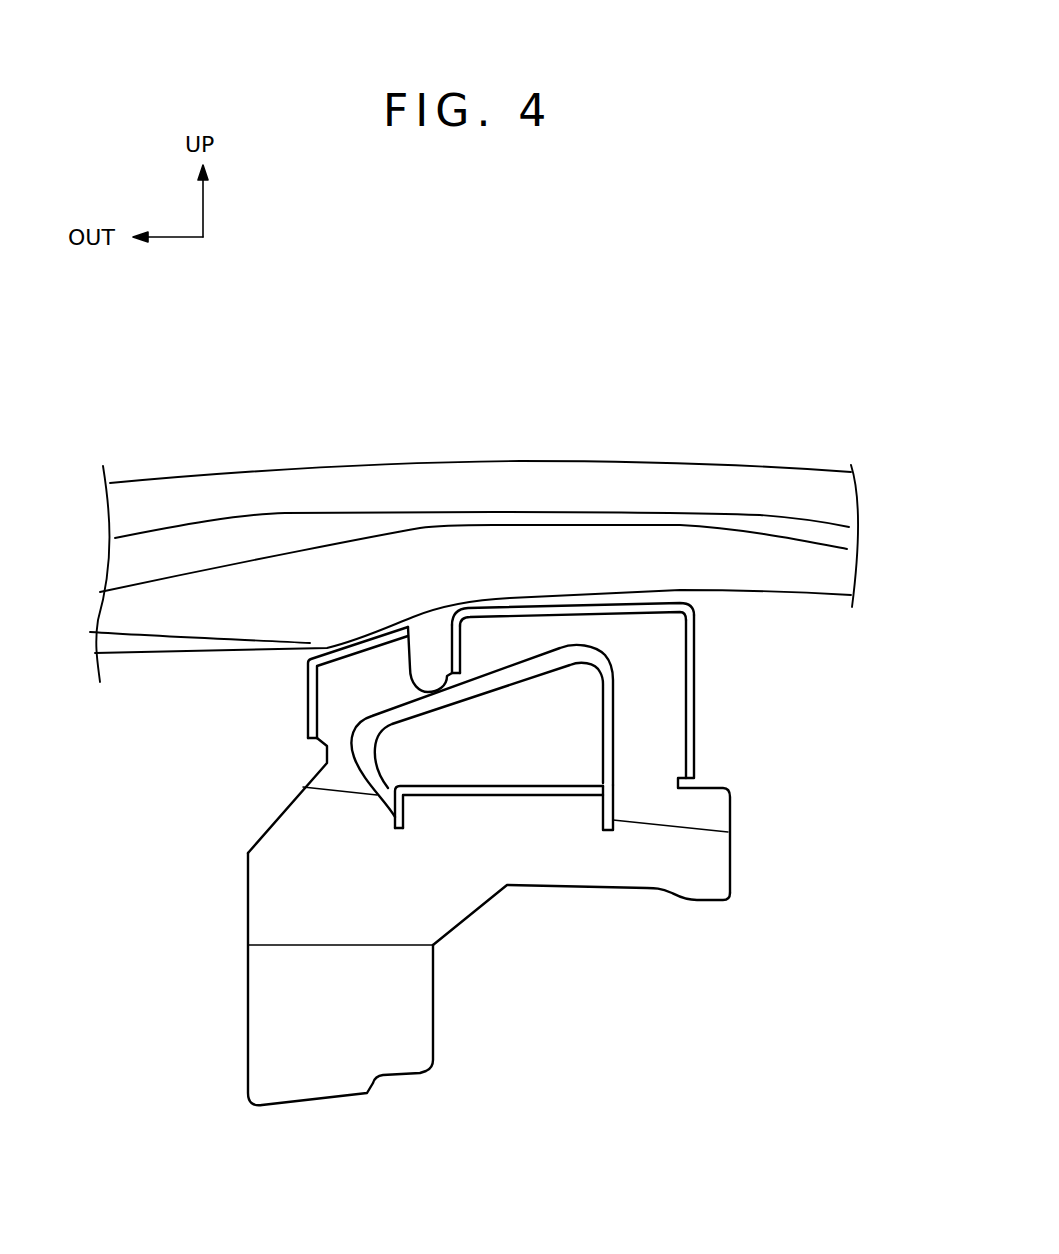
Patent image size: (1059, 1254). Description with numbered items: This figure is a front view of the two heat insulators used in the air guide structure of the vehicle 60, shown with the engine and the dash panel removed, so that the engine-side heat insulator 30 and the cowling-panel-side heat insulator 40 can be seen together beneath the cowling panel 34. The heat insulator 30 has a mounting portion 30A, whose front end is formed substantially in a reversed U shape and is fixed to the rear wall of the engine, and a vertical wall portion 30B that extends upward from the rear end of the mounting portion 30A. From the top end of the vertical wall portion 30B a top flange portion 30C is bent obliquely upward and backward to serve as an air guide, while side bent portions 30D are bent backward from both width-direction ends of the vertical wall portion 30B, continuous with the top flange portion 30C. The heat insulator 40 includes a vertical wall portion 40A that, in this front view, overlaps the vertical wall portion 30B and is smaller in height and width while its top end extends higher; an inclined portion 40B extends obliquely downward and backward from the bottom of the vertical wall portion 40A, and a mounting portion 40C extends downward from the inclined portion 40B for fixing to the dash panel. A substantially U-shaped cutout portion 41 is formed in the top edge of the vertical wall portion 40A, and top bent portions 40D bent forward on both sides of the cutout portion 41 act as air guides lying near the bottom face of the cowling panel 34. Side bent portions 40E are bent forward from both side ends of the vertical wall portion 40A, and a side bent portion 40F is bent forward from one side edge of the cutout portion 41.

The vehicle 60 is at (486, 593).
The cowling panel 34 is at (588, 568).
The heat insulator 40 is at (504, 836).
The vertical wall portion 40A is at (657, 697).
The inclined portion 40B is at (448, 895).
The mounting portion 40C is at (410, 1015).
The top bent portion 40D is at (360, 652).
The side bent portions 40E is at (308, 699).
The side bent portion 40F is at (462, 648).
The cutout portion 41 is at (420, 656).
The heat insulator 30 is at (516, 760).
The mounting portion 30A is at (497, 792).
The vertical wall portion 30B is at (552, 772).
The top flange portion 30C is at (487, 683).
The side bent portions 30D is at (368, 752).